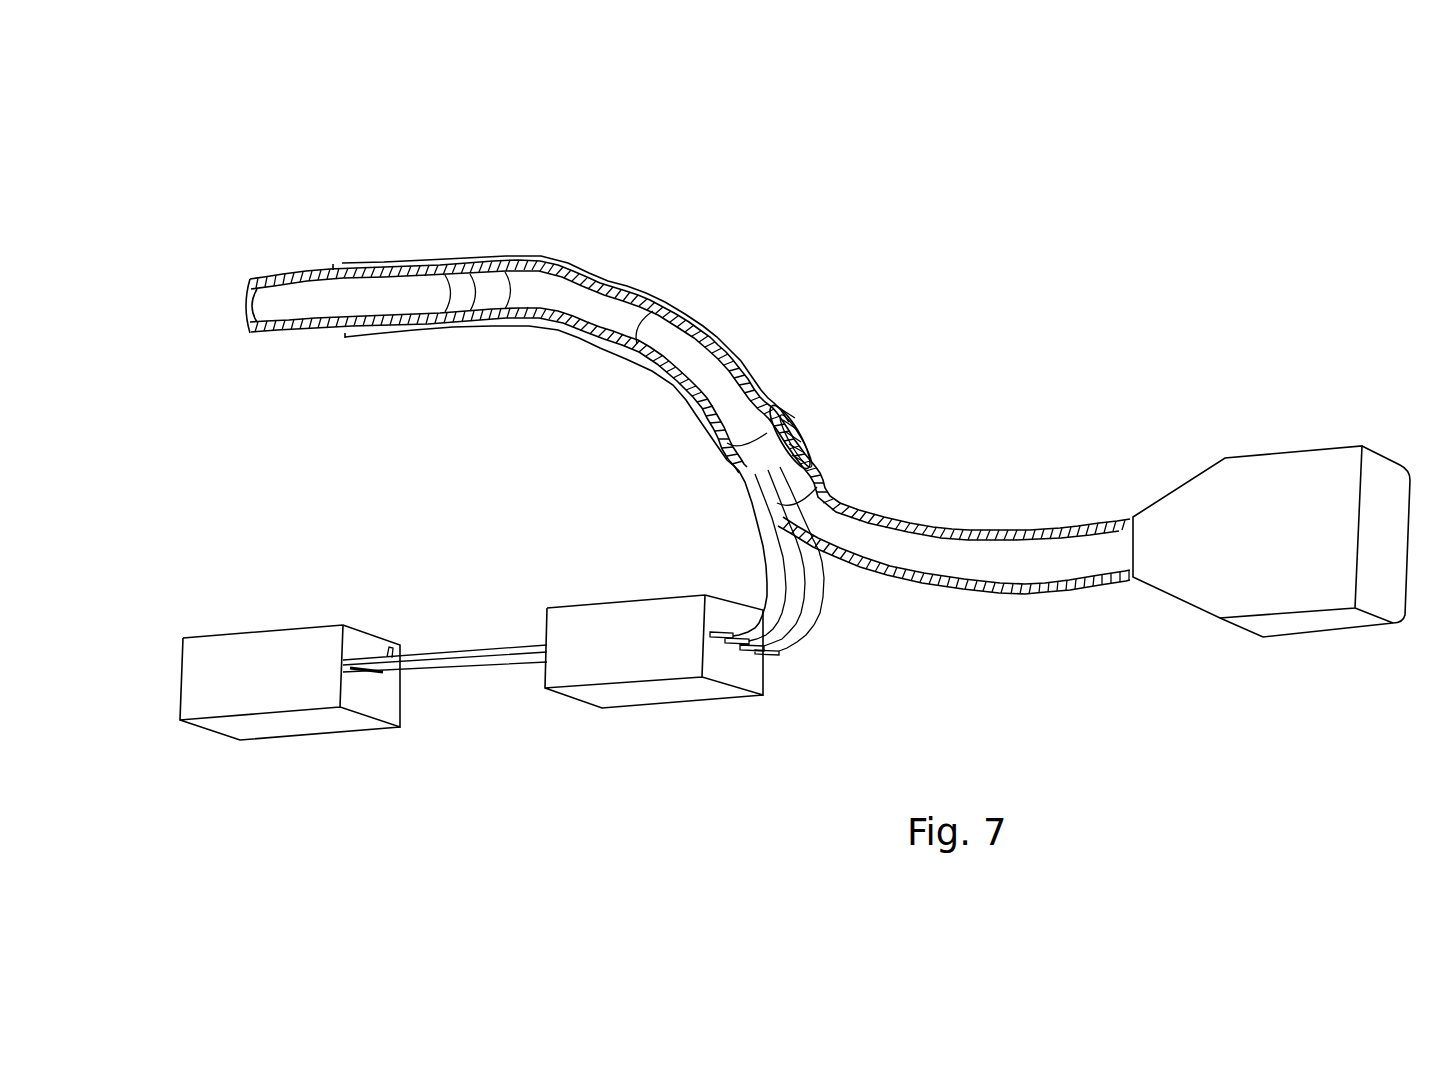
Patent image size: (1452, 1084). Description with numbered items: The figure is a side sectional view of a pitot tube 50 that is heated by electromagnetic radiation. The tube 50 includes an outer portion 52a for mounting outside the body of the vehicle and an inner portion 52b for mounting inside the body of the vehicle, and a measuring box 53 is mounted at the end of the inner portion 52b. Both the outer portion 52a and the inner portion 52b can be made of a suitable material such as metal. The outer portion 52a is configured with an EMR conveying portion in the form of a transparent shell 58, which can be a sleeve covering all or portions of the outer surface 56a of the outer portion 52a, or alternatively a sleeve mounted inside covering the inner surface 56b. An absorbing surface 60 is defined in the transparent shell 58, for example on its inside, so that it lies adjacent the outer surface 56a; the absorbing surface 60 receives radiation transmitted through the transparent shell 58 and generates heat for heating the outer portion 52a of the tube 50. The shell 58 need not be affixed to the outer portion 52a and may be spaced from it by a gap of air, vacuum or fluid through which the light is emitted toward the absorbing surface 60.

The pitot tube 50 is at (1062, 247).
The outer portion 52a is at (322, 280).
The inner portion 52b is at (981, 556).
The measuring box 53 is at (1271, 515).
The outer surface 56a is at (330, 337).
The inner surface 56b is at (278, 310).
The transparent shell 58 is at (688, 317).
The absorbing surface 60 is at (488, 262).